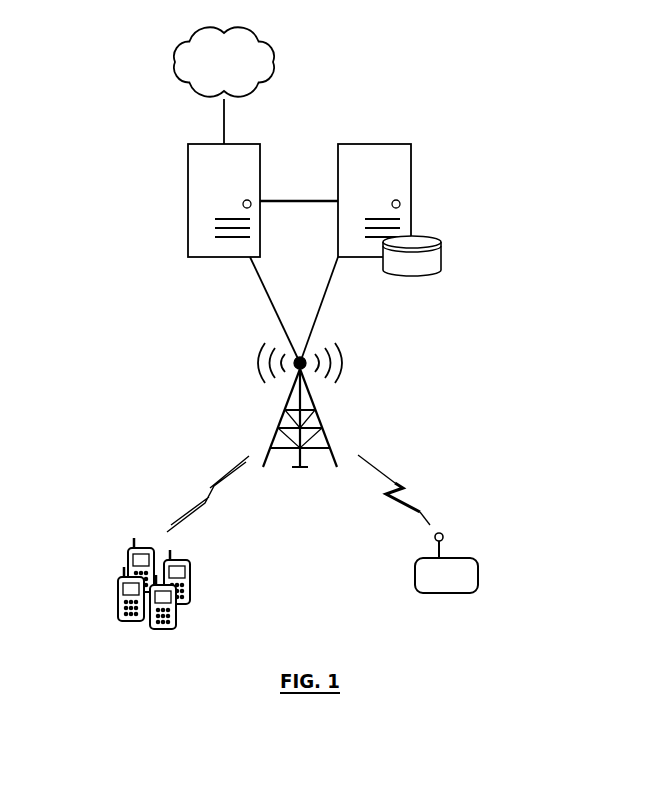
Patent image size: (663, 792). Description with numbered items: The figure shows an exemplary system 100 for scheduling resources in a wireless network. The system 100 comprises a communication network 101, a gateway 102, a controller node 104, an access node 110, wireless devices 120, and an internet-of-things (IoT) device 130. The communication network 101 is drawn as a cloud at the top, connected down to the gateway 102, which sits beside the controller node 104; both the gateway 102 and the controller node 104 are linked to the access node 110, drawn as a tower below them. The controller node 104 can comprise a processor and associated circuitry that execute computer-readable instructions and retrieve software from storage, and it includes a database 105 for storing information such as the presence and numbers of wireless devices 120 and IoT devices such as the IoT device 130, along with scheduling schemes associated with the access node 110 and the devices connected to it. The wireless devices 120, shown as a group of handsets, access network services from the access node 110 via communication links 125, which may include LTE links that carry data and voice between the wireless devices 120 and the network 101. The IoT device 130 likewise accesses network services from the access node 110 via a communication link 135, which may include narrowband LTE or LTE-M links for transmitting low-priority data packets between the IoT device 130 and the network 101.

The system 100 is at (358, 36).
The communication network 101 is at (241, 75).
The gateway 102 is at (188, 172).
The controller node 104 is at (411, 186).
The database 105 is at (441, 255).
The access node 110 is at (282, 438).
The wireless devices 120 is at (105, 534).
The communication links 125 is at (190, 478).
The internet-of-things (IoT) device 130 is at (466, 558).
The communication link 135 is at (398, 484).